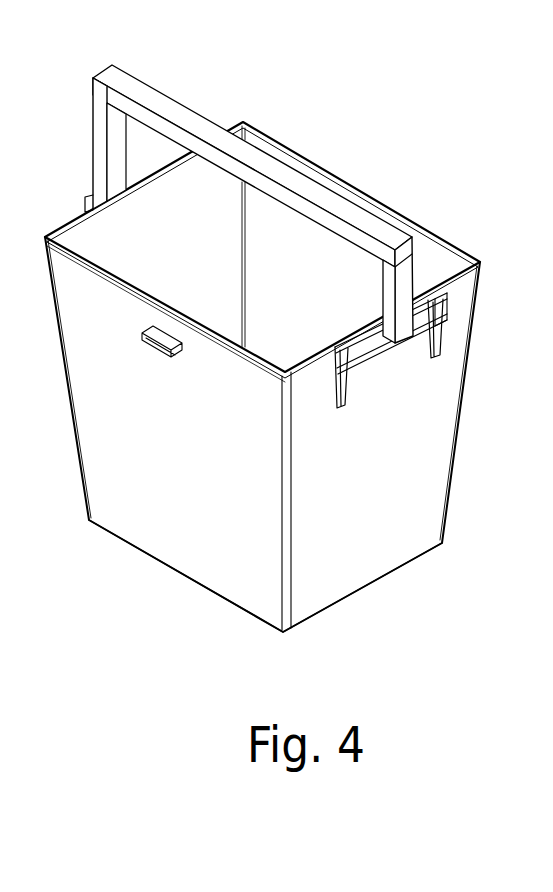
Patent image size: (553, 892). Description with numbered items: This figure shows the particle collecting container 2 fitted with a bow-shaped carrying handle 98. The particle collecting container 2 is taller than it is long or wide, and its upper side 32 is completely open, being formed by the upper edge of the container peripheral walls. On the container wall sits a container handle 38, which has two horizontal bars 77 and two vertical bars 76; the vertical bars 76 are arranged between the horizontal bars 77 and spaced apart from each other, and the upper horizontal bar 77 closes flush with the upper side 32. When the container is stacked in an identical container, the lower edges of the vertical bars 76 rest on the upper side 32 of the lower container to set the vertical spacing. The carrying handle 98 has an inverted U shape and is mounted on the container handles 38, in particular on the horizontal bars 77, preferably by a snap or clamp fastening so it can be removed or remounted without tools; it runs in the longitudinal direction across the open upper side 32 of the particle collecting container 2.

The particle collecting container 2 is at (468, 473).
The upper side 32 is at (452, 232).
The container handle 38 is at (391, 388).
The vertical bar 76 is at (338, 410).
The horizontal bar 77 is at (372, 333).
The carrying handle 98 is at (350, 213).